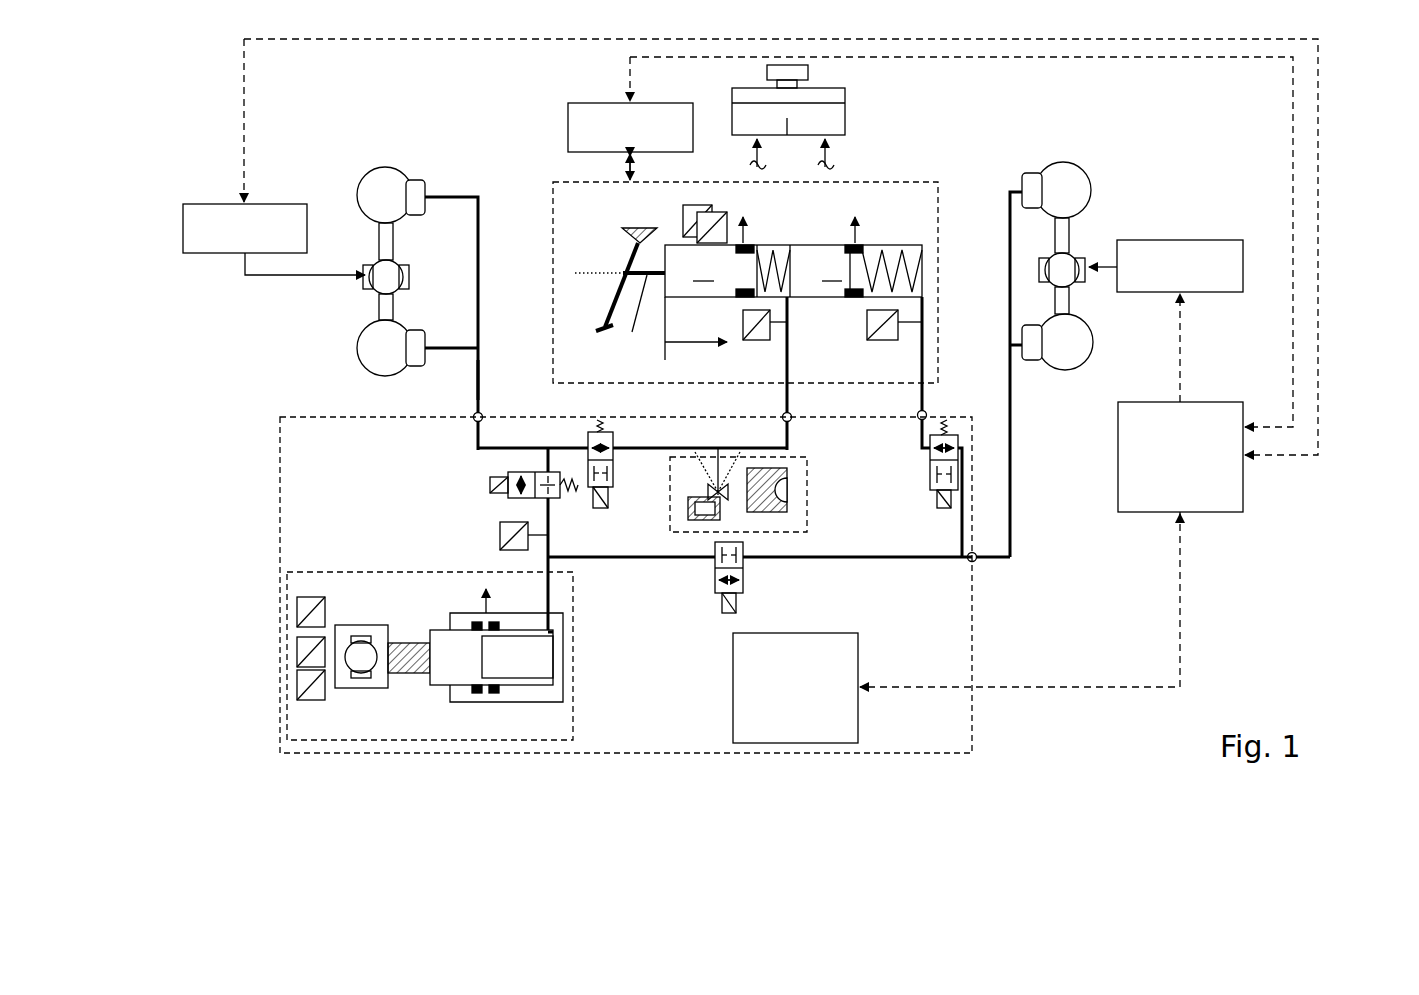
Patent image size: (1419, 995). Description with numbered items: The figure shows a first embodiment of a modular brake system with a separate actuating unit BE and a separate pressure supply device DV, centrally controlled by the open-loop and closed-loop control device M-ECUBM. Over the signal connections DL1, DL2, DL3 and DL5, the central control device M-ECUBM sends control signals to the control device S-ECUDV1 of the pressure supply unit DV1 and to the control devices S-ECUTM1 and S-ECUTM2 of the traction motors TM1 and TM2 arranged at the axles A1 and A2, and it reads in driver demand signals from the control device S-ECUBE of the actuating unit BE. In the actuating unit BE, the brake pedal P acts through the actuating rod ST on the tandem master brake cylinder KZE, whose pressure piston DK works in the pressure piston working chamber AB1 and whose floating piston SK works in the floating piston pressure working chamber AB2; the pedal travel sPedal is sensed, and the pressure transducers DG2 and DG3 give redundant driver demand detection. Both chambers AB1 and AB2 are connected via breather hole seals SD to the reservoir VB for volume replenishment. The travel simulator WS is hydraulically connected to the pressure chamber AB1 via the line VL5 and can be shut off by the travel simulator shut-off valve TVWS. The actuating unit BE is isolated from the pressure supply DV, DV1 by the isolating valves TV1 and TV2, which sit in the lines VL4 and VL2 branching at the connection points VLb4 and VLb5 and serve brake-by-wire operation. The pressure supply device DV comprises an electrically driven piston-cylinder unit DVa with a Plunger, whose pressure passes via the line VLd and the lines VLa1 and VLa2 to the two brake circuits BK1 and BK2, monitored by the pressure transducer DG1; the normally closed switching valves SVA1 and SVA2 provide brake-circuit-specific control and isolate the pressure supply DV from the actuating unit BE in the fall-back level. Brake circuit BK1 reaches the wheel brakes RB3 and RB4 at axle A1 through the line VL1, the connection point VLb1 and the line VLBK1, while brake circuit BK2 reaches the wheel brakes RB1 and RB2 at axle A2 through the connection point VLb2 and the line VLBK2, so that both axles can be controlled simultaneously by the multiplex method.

The data line 1 DL1 is at (1183, 595).
The data line 2 DL2 is at (1320, 340).
The data line 3 DL3 is at (1183, 350).
The data line 5 DL5 is at (1295, 221).
The open-loop and closed-loop control device of traction motor TM2 S-ECUTM2 is at (274, 239).
The open-loop and closed-loop control device of the actuating unit S-ECUBE is at (630, 141).
The open-loop and closed-loop control device of traction motor TM1 S-ECUTM1 is at (1166, 266).
The central open-loop and closed-loop control device M-ECUBM is at (1180, 457).
The open-loop and closed-loop control device of the pressure supply unit S-ECUDV1 is at (795, 688).
The wheel brake 1 RB1 is at (414, 181).
The wheel brake 2 RB2 is at (428, 343).
The wheel brake 3 RB3 is at (1031, 176).
The wheel brake 4 RB4 is at (1033, 365).
The axle 1 A1 is at (1070, 241).
The axle 2 A2 is at (379, 243).
The traction motor TM1 is at (1072, 279).
The traction motor TM2 is at (365, 280).
The brake circuit 1 BK1 is at (1009, 214).
The brake circuit 2 BK2 is at (479, 205).
The hydraulic line brake circuit 1 VLBK1 is at (1015, 468).
The hydraulic line brake circuit 2 VLBK2 is at (481, 375).
The connection point b1 VLb1 is at (977, 562).
The connection point b2 VLb2 is at (473, 415).
The connection point b4 VLb4 is at (915, 413).
The connection point b5 VLb5 is at (781, 415).
The hydraulic line 1 VL1 is at (962, 521).
The hydraulic line 2 VL2 is at (640, 447).
The hydraulic line 4 VL4 is at (926, 410).
The line VL5 is at (793, 410).
The hydraulic line a1 VLa1 is at (690, 560).
The hydraulic line a2 VLa2 is at (545, 512).
The hydraulic line d VLd is at (556, 605).
The reservoir VB is at (848, 120).
The actuating unit BE is at (890, 182).
The piston-cylinder unit (master cylinder) KZE is at (808, 245).
The pressure piston DK is at (703, 273).
The floating piston SK is at (832, 273).
The pressure piston working chamber AB1 is at (776, 250).
The floating piston pressure working chamber AB2 is at (912, 252).
The breather hole seal SD is at (745, 258).
The brake pedal P is at (596, 322).
The actuating rod ST is at (637, 316).
The pedal travel sPedal is at (696, 335).
The pressure transducer DG1 is at (500, 540).
The pressure transducer DG2 is at (758, 342).
The pressure transducer DG3 is at (867, 335).
The isolating valve TV1 is at (930, 470).
The isolating valve TV2 is at (615, 478).
The switching valve SVA1 is at (745, 578).
The switching valve SVA2 is at (508, 485).
The travel simulator WS is at (790, 486).
The travel simulator shut-off valve TVWS is at (690, 511).
The pressure supply device DV is at (287, 580).
The pressure supply unit DV1 is at (280, 460).
The pressure supply cylinder DVa is at (556, 575).
The plunger Plunger is at (491, 657).